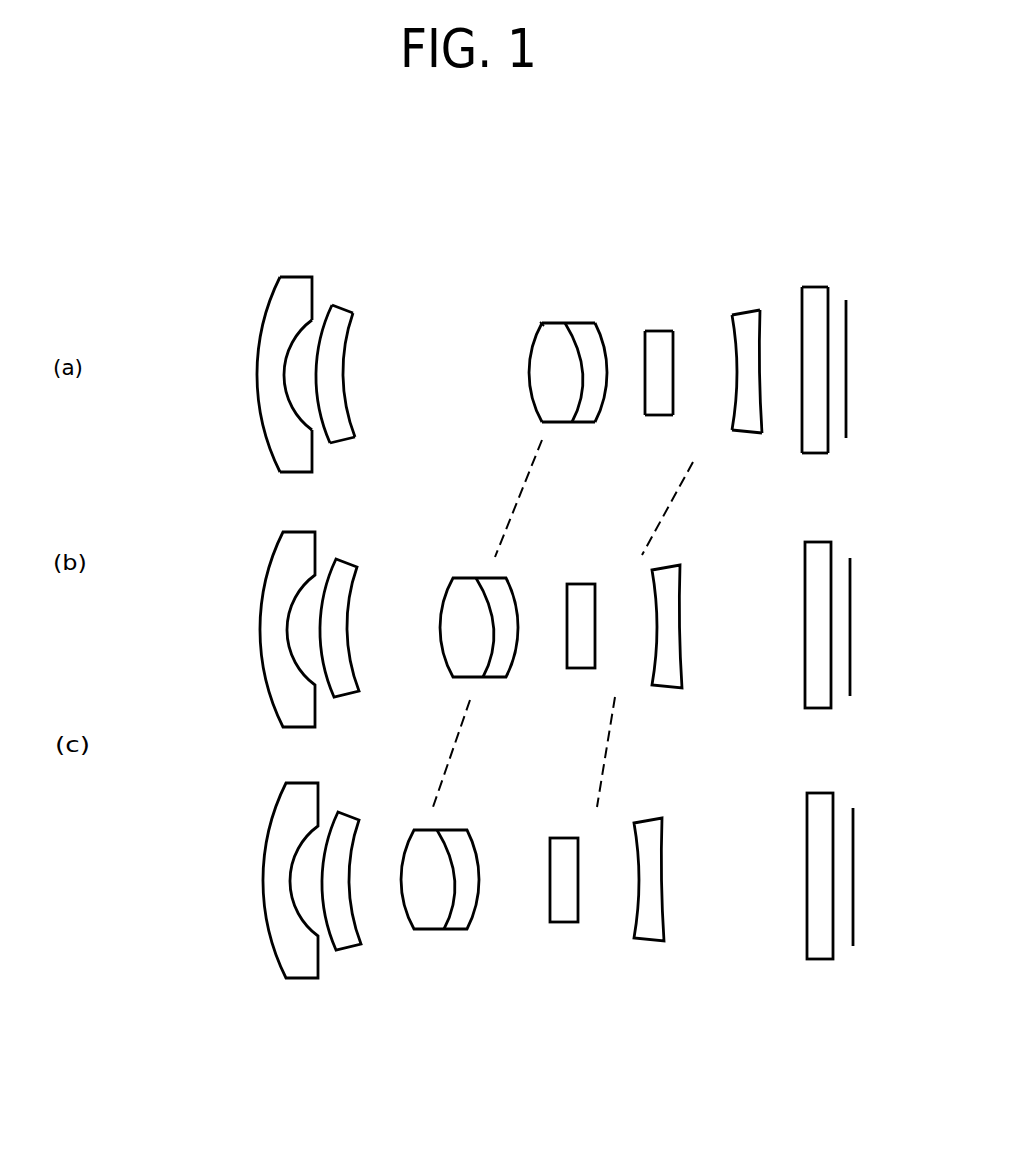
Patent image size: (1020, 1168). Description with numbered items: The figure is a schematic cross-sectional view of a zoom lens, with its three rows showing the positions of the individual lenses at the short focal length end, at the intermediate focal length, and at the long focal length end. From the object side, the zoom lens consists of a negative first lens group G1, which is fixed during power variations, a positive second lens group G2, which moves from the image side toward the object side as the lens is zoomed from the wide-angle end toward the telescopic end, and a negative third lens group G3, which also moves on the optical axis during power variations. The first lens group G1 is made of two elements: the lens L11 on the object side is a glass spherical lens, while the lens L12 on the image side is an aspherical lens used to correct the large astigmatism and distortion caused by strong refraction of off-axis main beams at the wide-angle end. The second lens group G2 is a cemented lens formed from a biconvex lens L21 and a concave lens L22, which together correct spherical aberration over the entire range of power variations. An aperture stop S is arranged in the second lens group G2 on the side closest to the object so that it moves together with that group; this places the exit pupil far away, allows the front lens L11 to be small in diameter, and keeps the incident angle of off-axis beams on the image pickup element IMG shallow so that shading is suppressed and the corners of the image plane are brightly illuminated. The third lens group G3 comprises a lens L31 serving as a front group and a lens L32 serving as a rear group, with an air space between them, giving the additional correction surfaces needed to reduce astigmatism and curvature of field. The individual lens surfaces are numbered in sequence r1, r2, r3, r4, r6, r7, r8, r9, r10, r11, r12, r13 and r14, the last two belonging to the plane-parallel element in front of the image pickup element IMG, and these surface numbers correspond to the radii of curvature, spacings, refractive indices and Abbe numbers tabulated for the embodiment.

The first lens group G1 is at (355, 230).
The second lens group G2 is at (605, 230).
The third lens group G3 is at (765, 440).
The lens L11 is at (290, 277).
The lens L12 is at (333, 372).
The biconvex lens L21 is at (545, 395).
The concave lens L22 is at (587, 405).
The lens L31 is at (662, 337).
The lens L32 is at (742, 342).
The aperture stop S is at (530, 338).
The lens surface r1 is at (267, 312).
The lens surface r2 is at (316, 320).
The lens surface r3 is at (326, 440).
The lens surface r4 is at (352, 322).
The lens surface r6 is at (532, 365).
The lens surface r7 is at (583, 342).
The lens surface r8 is at (604, 337).
The lens surface r9 is at (645, 403).
The lens surface r10 is at (674, 333).
The lens surface r11 is at (732, 405).
The lens surface r12 is at (760, 315).
The lens surface r13 is at (802, 440).
The lens surface r14 is at (828, 294).
The image pickup element IMG is at (847, 432).